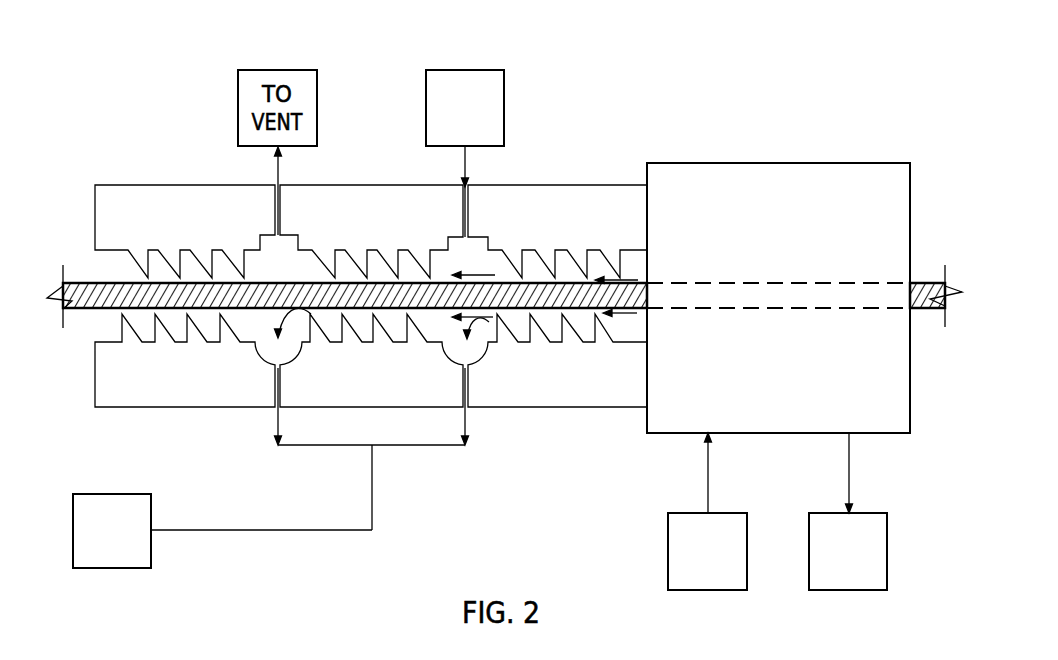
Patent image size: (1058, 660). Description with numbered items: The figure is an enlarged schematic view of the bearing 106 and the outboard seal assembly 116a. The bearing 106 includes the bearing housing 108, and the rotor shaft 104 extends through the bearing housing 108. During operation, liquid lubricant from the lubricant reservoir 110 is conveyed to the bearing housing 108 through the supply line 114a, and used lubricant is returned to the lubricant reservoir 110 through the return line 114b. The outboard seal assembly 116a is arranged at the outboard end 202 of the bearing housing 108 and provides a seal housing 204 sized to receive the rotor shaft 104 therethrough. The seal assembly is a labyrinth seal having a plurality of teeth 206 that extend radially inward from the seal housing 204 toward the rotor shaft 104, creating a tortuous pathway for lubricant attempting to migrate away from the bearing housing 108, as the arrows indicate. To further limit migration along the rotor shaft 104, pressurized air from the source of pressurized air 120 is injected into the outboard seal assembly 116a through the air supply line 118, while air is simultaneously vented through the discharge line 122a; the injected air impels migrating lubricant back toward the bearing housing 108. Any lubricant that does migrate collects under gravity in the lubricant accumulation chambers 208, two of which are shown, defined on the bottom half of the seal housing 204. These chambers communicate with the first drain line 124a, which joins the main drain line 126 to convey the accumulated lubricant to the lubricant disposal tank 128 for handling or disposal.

The outboard seal assembly 116a is at (130, 128).
The rotor shaft 104 is at (92, 283).
The seal housing 204 is at (368, 185).
The teeth 206 is at (518, 260).
The lubricant accumulation chambers 208 is at (267, 362).
The discharge line 122a is at (273, 177).
The air supply line 118 is at (470, 176).
The source of pressurized air 120 is at (446, 132).
The outboard end 202 is at (640, 168).
The bearing housing 108 is at (778, 271).
The bearing 106 is at (795, 224).
The first drain line 124a is at (372, 492).
The main drain line 126 is at (242, 532).
The lubricant disposal tank 128 is at (130, 557).
The supply line 114a is at (708, 470).
The return line 114b is at (849, 470).
The lubricant reservoir 110 is at (690, 578).